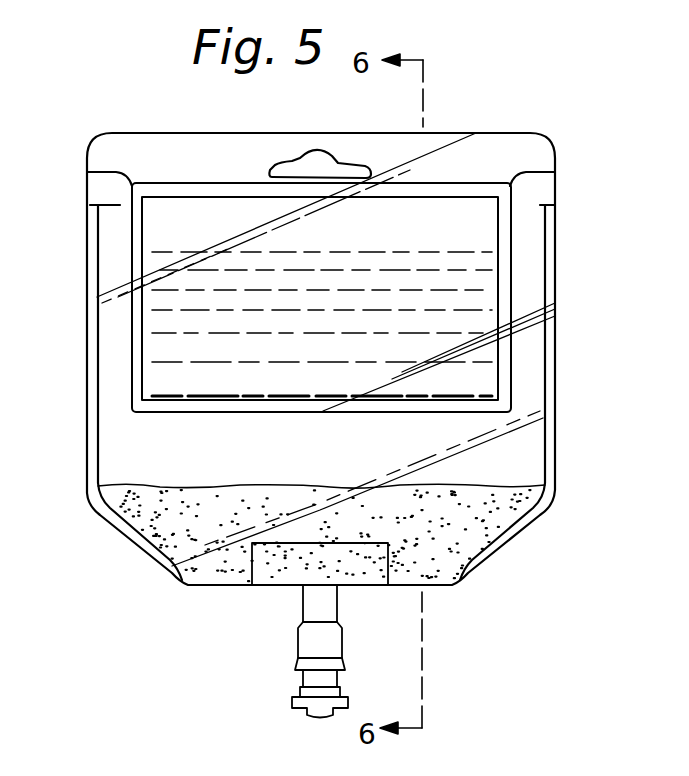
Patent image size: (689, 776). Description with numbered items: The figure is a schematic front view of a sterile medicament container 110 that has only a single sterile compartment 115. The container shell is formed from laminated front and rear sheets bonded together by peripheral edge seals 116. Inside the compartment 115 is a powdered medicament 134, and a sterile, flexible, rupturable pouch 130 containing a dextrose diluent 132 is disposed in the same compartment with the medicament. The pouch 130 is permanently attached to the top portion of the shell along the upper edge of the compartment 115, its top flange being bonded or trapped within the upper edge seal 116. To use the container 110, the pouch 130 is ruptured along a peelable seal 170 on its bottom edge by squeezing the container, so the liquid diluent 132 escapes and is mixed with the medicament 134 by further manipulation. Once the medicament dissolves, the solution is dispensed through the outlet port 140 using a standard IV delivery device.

The sterile medicament container 110 is at (78, 159).
The sterile compartment 115 is at (532, 378).
The peripheral edge seals 116 is at (228, 186).
The rupturable pouch 130 is at (511, 258).
The dextrose diluent 132 is at (350, 338).
The powdered medicament 134 is at (450, 532).
The outlet port 140 is at (345, 673).
The peelable seal 170 is at (288, 404).